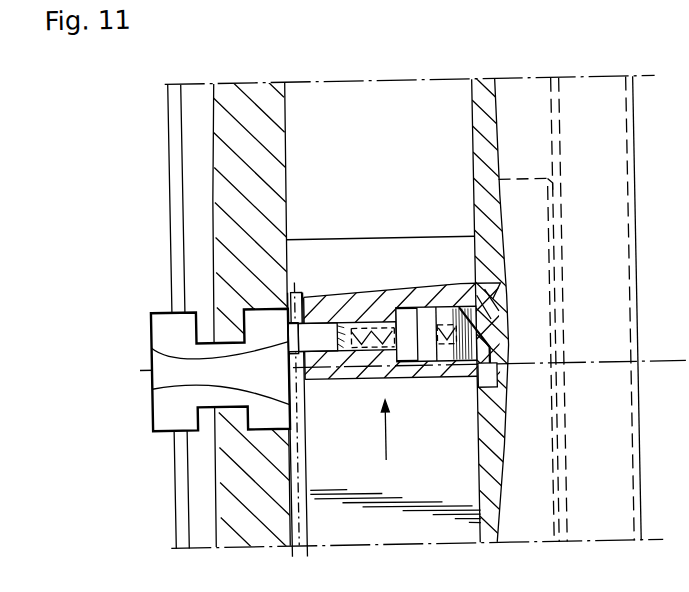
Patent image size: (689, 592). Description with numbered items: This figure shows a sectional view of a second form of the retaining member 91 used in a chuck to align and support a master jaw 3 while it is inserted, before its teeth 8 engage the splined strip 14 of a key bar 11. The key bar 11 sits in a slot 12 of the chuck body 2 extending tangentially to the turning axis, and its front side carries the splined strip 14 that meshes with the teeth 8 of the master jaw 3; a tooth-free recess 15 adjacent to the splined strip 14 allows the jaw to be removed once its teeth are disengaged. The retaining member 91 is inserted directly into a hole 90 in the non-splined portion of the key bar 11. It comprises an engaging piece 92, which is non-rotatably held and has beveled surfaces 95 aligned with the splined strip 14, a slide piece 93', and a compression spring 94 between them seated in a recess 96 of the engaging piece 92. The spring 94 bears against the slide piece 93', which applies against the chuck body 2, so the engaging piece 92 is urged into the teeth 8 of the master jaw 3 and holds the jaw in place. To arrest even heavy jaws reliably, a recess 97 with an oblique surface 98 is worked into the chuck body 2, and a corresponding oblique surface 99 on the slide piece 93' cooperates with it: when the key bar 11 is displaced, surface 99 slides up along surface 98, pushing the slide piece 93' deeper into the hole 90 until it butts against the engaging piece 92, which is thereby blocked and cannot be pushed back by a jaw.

The chuck body 2 is at (485, 152).
The master jaw 3 is at (171, 324).
The teeth 8 is at (152, 388).
The key bar 11 is at (372, 253).
The slot 12 is at (292, 161).
The splined strip 14 is at (300, 532).
The tooth-free recess 15 is at (306, 300).
The hole 90 is at (434, 305).
The retaining member 91 is at (395, 462).
The engaging piece 92 is at (318, 354).
The slide piece 93' is at (453, 372).
The compression spring 94 is at (417, 364).
The beveled surfaces 95 is at (180, 358).
The recess 96 is at (365, 354).
The recess 97 is at (497, 385).
The oblique surface 98 is at (493, 335).
The oblique surface 99 is at (481, 328).